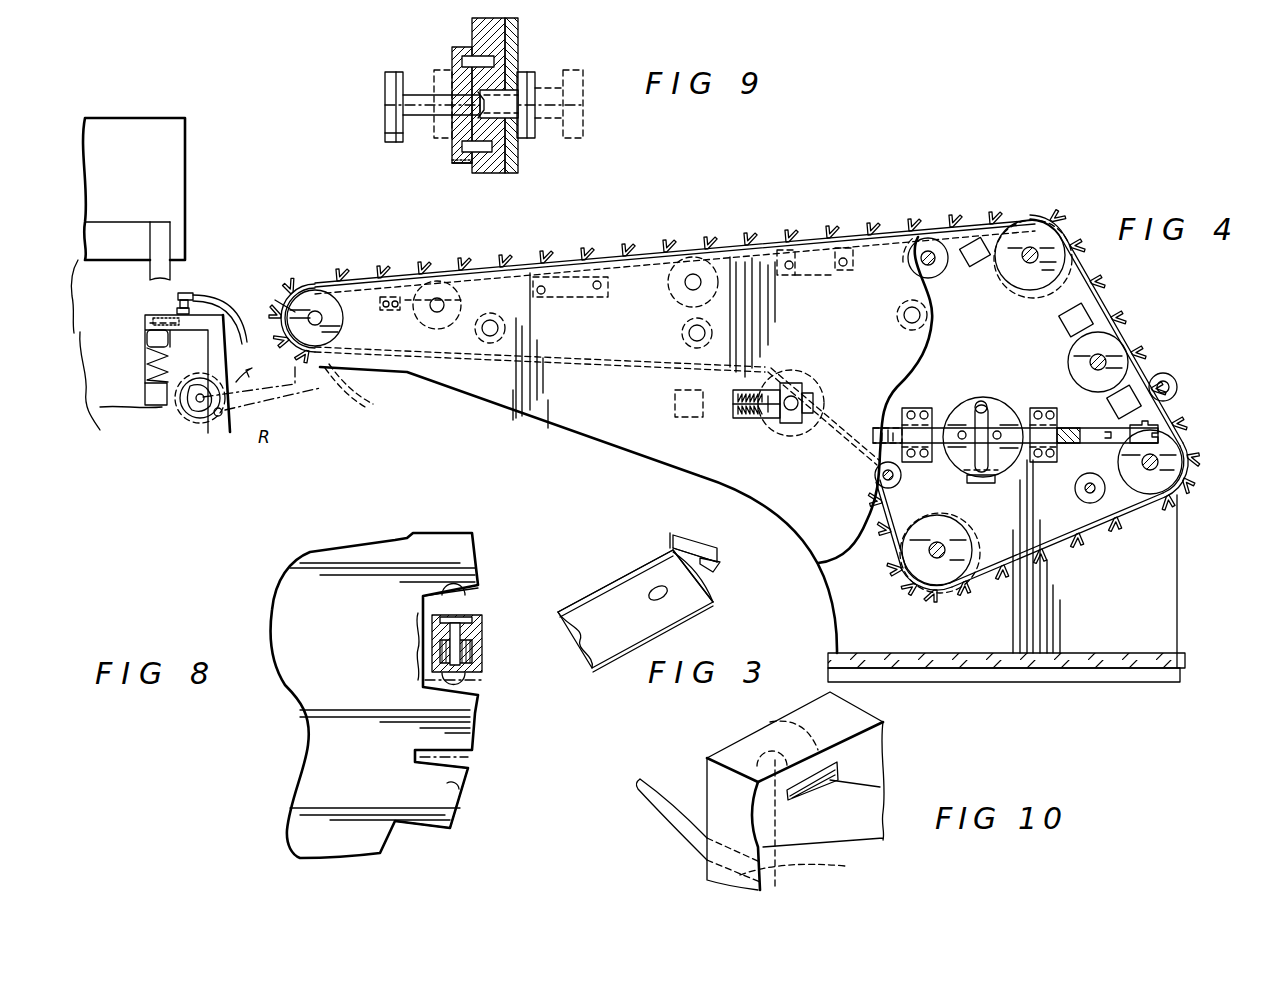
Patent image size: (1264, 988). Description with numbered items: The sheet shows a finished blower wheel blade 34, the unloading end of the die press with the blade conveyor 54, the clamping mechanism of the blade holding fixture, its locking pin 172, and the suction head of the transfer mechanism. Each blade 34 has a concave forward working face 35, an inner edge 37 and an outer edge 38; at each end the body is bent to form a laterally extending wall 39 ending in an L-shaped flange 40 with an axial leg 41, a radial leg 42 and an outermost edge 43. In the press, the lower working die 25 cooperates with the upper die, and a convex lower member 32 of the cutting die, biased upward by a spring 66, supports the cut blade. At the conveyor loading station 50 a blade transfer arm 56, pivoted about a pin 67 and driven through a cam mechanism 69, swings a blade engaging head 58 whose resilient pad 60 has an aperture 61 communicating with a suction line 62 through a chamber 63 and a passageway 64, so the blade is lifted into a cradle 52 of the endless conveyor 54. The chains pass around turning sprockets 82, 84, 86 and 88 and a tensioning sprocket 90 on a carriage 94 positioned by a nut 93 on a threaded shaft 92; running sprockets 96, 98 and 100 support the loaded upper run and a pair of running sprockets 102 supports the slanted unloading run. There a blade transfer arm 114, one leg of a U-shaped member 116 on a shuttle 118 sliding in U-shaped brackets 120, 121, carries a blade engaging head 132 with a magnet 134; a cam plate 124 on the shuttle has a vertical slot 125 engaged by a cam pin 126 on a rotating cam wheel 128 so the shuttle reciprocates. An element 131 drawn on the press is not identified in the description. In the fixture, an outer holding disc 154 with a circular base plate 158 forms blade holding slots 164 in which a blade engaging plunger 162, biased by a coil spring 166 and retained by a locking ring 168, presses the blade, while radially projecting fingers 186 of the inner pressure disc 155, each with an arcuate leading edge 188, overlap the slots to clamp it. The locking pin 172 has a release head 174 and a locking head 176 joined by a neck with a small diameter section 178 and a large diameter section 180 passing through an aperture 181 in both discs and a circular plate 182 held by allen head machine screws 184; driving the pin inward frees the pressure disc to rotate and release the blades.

In FIG. 4, the lower working die 25 is at (100, 418).
In FIG. 4, the convex lower member 32 is at (146, 340).
In FIG. 4, the blade 34 is at (269, 314).
In FIG. 3, the blade 34 is at (577, 584).
In FIG. 3, the concave forward working face 35 is at (644, 615).
In FIG. 3, the inner edge 37 is at (600, 666).
In FIG. 3, the outer edge 38 is at (640, 580).
In FIG. 3, the laterally extending wall 39 is at (712, 576).
In FIG. 3, the L-shaped flange 40 is at (678, 512).
In FIG. 3, the axial leg 41 is at (718, 565).
In FIG. 3, the radial leg 42 is at (722, 550).
In FIG. 3, the outermost edge 43 is at (703, 540).
In FIG. 4, the conveyor loading station 50 is at (252, 274).
In FIG. 4, the cradle 52 is at (392, 271).
In FIG. 4, the endless conveyor 54 is at (523, 238).
In FIG. 4, the blade transfer arm 56 is at (230, 352).
In FIG. 4, the blade engaging head 58 is at (184, 374).
In FIG. 10, the blade engaging head 58 is at (716, 778).
In FIG. 4, the resilient pad 60 is at (148, 326).
In FIG. 10, the resilient pad 60 is at (752, 830).
In FIG. 10, the aperture 61 is at (808, 796).
In FIG. 4, the suction line 62 is at (218, 296).
In FIG. 10, the chamber 63 is at (785, 724).
In FIG. 10, the passageway 64 is at (826, 866).
In FIG. 4, the spring 66 is at (148, 418).
In FIG. 4, the pin 67 is at (218, 416).
In FIG. 4, the cam mechanism 69 is at (190, 422).
In FIG. 4, the turning sprocket 82 is at (316, 303).
In FIG. 4, the turning sprocket 84 is at (1030, 235).
In FIG. 4, the turning sprocket 86 is at (1186, 456).
In FIG. 4, the turning sprocket 88 is at (919, 578).
In FIG. 4, the tensioning sprocket 90 is at (791, 426).
In FIG. 4, the threaded shaft 92 is at (744, 418).
In FIG. 4, the nut 93 is at (776, 420).
In FIG. 4, the carriage 94 is at (788, 383).
In FIG. 4, the running sprocket 96 is at (465, 296).
In FIG. 4, the running sprocket 98 is at (668, 303).
In FIG. 4, the running sprocket 100 is at (902, 274).
In FIG. 4, the running sprocket 102 is at (1078, 347).
In FIG. 4, the blade transfer arm 114 is at (1112, 440).
In FIG. 4, the U-shaped member 116 is at (1068, 464).
In FIG. 4, the shuttle 118 is at (1024, 470).
In FIG. 4, the U-shaped bracket 120 is at (916, 408).
In FIG. 4, the U-shaped bracket 121 is at (1044, 409).
In FIG. 4, the cam plate 124 is at (959, 388).
In FIG. 4, the vertical slot 125 is at (966, 478).
In FIG. 4, the cam pin 126 is at (981, 406).
In FIG. 4, the cam wheel 128 is at (994, 404).
In FIG. 4, the arm 131 is at (176, 230).
In FIG. 4, the blade engaging head 132 is at (1164, 425).
In FIG. 4, the magnet 134 is at (1176, 394).
In FIG. 9, the outer holding disc 154 is at (478, 33).
In FIG. 9, the inner pressure disc 155 is at (518, 36).
In FIG. 8, the circular base plate 158 is at (376, 695).
In FIG. 8, the blade engaging plunger 162 is at (470, 680).
In FIG. 8, the blade holding slot 164 is at (462, 604).
In FIG. 8, the coil spring 166 is at (480, 655).
In FIG. 8, the locking ring 168 is at (465, 615).
In FIG. 9, the locking pin 172 is at (364, 90).
In FIG. 9, the release head 174 is at (386, 116).
In FIG. 9, the locking head 176 is at (528, 128).
In FIG. 9, the small diameter section 178 is at (418, 108).
In FIG. 9, the large diameter section 180 is at (518, 91).
In FIG. 9, the aperture 181 is at (506, 95).
In FIG. 9, the circular plate 182 is at (463, 163).
In FIG. 9, the allen head machine screw 184 is at (458, 154).
In FIG. 8, the radially projecting finger 186 is at (455, 738).
In FIG. 8, the arcuate leading edge 188 is at (458, 785).